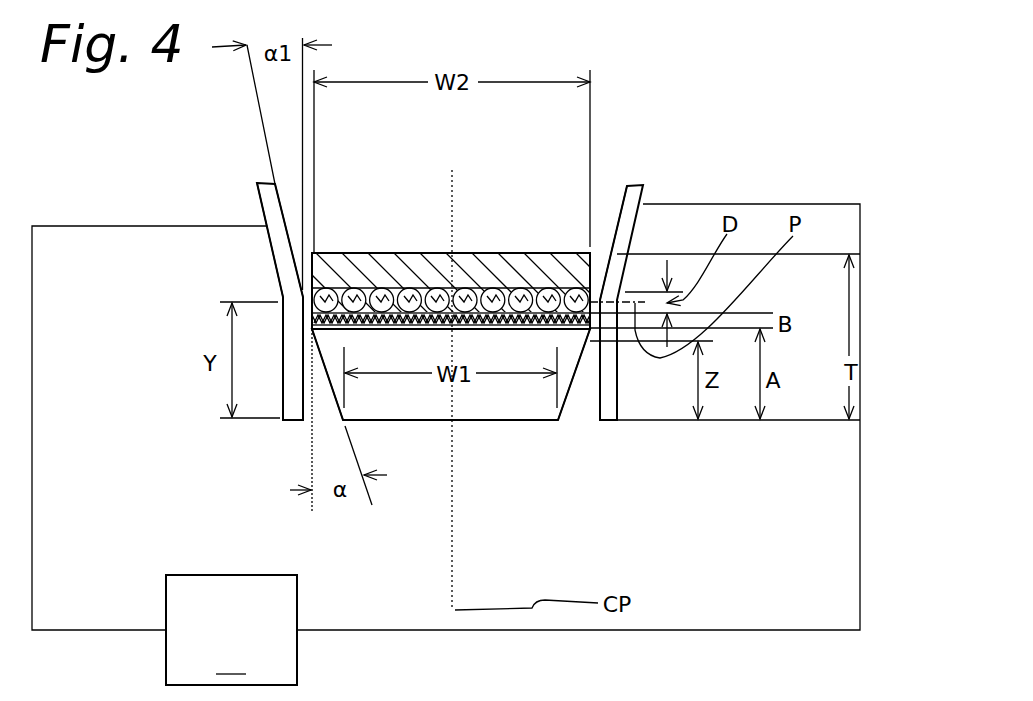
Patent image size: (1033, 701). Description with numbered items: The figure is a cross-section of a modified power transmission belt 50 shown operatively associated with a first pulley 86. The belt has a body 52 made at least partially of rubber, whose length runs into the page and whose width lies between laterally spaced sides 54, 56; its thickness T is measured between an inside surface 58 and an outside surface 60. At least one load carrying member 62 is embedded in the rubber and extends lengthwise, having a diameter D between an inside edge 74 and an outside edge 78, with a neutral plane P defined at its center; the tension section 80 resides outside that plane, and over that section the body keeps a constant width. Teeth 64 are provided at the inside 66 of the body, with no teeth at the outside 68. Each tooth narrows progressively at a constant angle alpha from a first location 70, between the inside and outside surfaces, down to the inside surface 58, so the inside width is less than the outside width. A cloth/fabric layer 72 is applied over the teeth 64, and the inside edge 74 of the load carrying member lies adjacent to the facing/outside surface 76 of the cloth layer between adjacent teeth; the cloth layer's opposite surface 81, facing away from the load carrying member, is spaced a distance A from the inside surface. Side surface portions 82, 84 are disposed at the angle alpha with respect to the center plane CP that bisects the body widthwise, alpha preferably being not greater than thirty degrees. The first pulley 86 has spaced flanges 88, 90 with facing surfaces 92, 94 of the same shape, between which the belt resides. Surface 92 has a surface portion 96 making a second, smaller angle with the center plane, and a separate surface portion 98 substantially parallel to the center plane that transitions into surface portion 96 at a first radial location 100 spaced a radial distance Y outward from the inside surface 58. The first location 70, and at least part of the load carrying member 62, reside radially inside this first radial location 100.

The power transmission belt 50 is at (559, 423).
The body 52 is at (507, 405).
The side 54 is at (333, 398).
The side 56 is at (620, 422).
The inside surface 58 is at (488, 420).
The outside surface 60 is at (444, 253).
The load carrying member 62 is at (338, 253).
The teeth 64 is at (445, 420).
The inside 66 is at (470, 422).
The outside 68 is at (548, 251).
The first location 70 is at (312, 340).
The cloth/fabric layer 72 is at (393, 329).
The inside edge 74 is at (498, 330).
The facing/outside surface 76 is at (427, 262).
The outside edge 78 is at (379, 288).
The tension section 80 is at (500, 262).
The inside/outside surface of cloth layer 81 is at (367, 329).
The side surface portion 82 is at (308, 368).
The side surface portion 84 is at (571, 390).
The first pulley 86 is at (302, 297).
The flange 88 is at (263, 208).
The flange 90 is at (618, 210).
The surface 92 is at (283, 212).
The surface 94 is at (645, 190).
The surface portion 96 is at (273, 263).
The surface portion 98 is at (330, 388).
The first radial location 100 is at (299, 252).